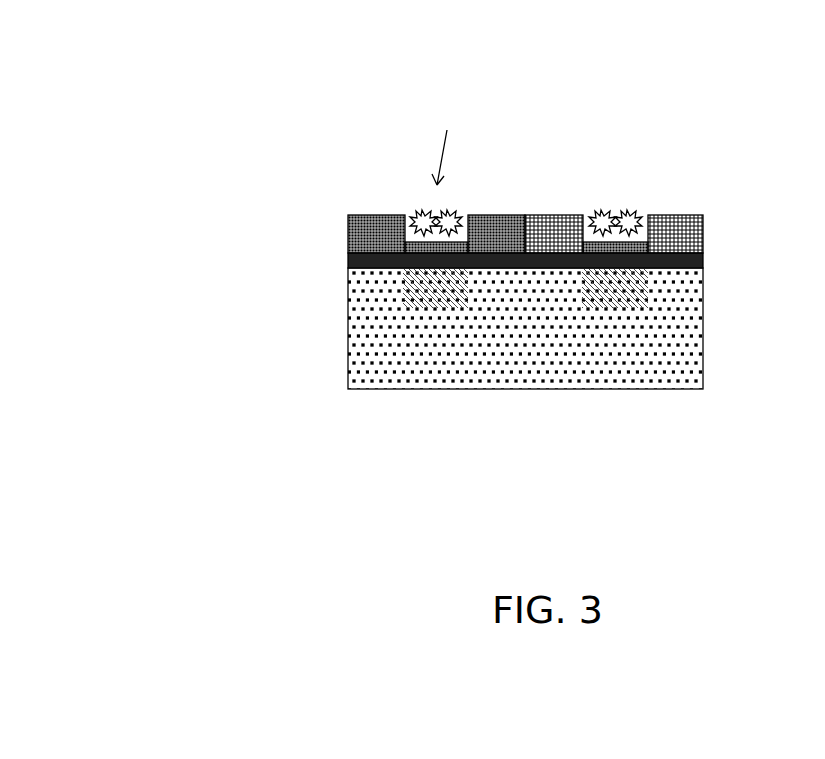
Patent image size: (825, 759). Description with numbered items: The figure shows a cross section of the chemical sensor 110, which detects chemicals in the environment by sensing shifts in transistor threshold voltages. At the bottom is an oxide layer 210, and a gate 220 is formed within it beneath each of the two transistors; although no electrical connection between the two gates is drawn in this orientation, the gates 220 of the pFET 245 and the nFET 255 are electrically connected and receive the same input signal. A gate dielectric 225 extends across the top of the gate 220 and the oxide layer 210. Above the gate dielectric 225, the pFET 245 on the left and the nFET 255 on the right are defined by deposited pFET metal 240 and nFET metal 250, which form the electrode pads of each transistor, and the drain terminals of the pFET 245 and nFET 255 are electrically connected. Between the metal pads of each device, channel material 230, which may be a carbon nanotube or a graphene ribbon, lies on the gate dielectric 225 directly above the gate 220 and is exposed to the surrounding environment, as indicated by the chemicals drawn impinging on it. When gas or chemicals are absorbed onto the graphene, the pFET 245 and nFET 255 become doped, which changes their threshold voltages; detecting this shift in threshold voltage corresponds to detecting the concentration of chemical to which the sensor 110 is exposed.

The sensor 110 is at (160, 105).
The oxide layer 210 is at (353, 343).
The gate 220 is at (600, 292).
The gate dielectric 225 is at (703, 260).
The channel material 230 is at (648, 245).
The pFET metal 240 is at (370, 215).
The pFET 245 is at (384, 317).
The nFET metal 250 is at (678, 215).
The nFET 255 is at (663, 313).